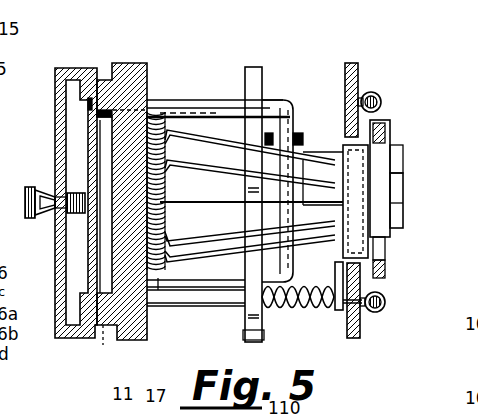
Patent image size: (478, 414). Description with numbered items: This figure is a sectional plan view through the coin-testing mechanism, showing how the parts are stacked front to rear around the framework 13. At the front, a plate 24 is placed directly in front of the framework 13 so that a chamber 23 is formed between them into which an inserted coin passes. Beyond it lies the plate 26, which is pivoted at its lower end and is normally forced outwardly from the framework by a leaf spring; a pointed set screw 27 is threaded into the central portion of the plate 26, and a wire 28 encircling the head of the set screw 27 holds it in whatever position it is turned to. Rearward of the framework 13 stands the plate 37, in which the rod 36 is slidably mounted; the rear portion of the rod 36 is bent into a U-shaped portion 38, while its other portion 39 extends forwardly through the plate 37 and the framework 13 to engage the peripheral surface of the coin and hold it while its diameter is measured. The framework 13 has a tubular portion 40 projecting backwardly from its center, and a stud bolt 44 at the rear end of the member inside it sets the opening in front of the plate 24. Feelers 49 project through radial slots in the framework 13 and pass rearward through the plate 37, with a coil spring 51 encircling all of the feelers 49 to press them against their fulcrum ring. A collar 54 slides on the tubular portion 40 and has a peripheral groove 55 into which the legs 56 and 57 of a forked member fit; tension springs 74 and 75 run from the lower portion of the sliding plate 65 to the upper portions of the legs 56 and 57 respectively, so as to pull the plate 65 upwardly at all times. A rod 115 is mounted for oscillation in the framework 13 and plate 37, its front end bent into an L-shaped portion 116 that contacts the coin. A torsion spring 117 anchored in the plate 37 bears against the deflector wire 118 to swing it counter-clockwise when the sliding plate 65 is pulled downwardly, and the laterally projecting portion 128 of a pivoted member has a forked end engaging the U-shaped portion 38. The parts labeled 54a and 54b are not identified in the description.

The framework 13 is at (127, 68).
The chamber 23 is at (103, 237).
The plate 24 is at (90, 128).
The plate 26 is at (75, 68).
The set screw 27 is at (25, 201).
The wire 28 is at (53, 198).
The rod 36 is at (185, 300).
The plate 37 is at (243, 336).
The U-shaped portion 38 is at (293, 125).
The portion of rod 39 is at (213, 105).
The tubular portion 40 is at (245, 218).
The stud bolt 44 is at (405, 197).
The feelers 49 is at (239, 150).
The coil spring 51 is at (167, 180).
The collar 54 is at (393, 150).
The hub arm 54a is at (323, 153).
The hub arm 54b is at (321, 182).
The peripheral groove 55 is at (380, 176).
The leg 56 is at (383, 125).
The leg 57 is at (385, 275).
The sliding plate 65 is at (352, 62).
The tension spring 74 is at (374, 96).
The tension spring 75 is at (387, 303).
The rod 115 is at (225, 300).
The L-shaped portion 116 is at (91, 343).
The torsion spring 117 is at (303, 312).
The deflector wire 118 is at (333, 275).
The laterally projecting portion 128 is at (303, 138).